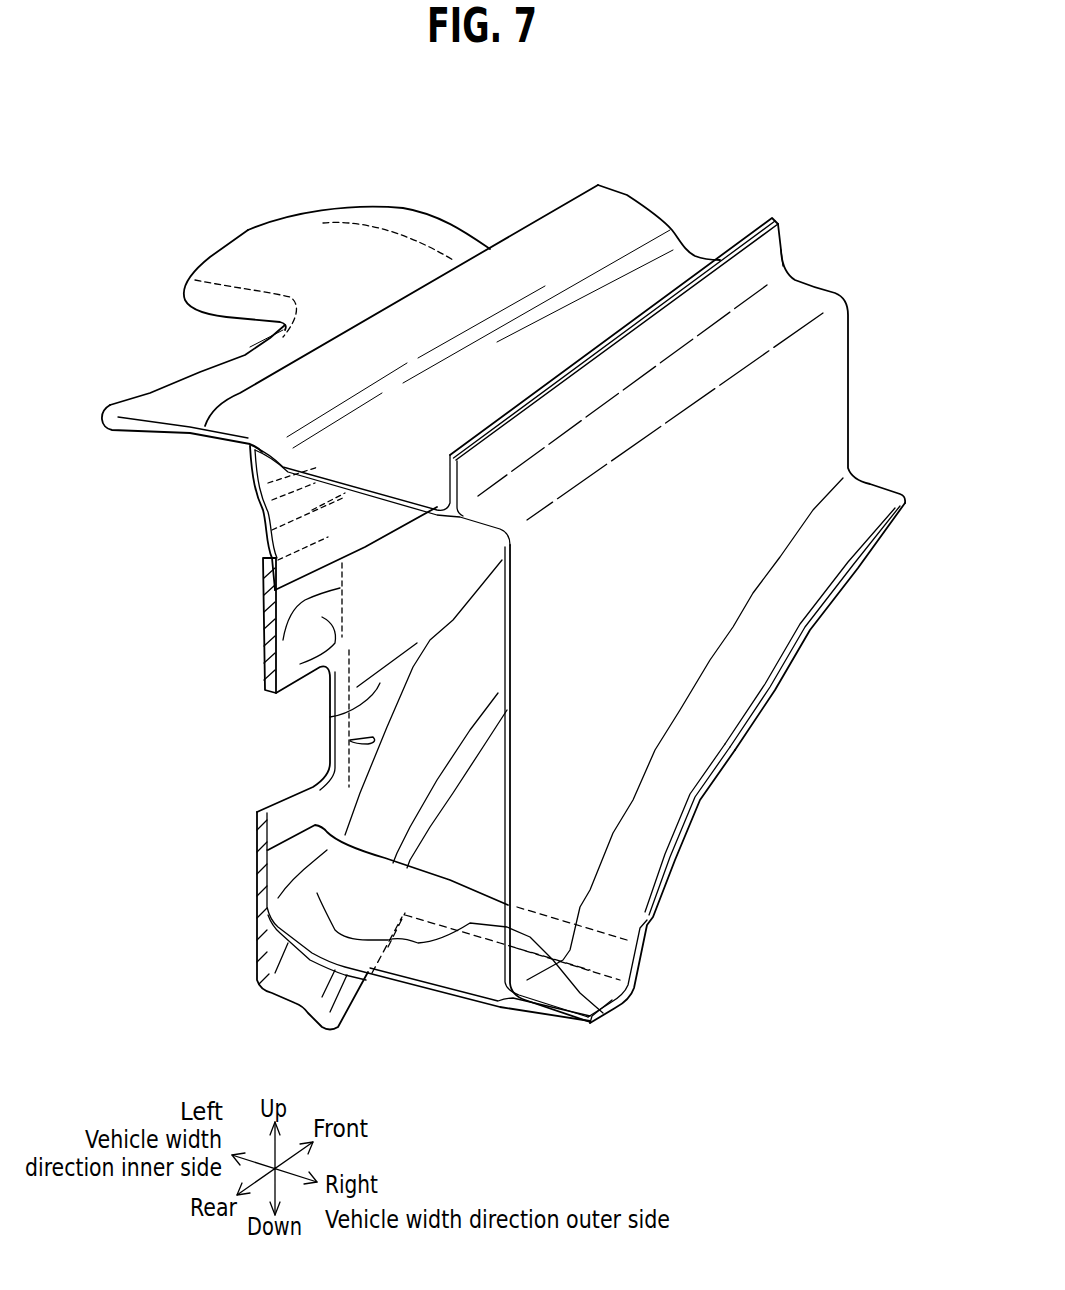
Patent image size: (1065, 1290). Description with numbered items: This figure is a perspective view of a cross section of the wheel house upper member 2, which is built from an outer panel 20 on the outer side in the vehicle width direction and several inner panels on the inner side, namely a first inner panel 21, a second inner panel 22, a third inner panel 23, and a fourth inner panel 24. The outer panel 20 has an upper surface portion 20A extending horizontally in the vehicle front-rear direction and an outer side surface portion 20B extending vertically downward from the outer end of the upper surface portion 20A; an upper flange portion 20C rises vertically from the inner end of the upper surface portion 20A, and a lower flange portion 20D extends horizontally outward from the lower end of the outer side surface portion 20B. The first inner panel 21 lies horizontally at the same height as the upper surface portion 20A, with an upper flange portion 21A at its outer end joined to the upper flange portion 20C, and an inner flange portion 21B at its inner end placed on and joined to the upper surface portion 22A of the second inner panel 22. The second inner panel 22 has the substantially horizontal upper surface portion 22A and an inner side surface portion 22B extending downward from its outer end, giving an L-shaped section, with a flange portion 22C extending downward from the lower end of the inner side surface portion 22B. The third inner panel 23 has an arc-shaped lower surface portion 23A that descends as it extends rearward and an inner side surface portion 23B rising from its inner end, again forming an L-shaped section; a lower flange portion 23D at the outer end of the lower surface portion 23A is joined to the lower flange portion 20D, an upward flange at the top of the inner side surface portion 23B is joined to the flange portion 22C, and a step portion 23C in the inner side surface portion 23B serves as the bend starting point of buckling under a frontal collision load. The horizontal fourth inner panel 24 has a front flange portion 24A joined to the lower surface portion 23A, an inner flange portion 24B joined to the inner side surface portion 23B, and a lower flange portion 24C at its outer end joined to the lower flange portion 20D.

The wheel house upper member 2 is at (773, 752).
The outer panel 20 is at (813, 410).
The upper surface portion 20A is at (797, 307).
The outer side surface portion 20B is at (800, 463).
The upper flange portion 20C is at (767, 255).
The lower flange portion 20D is at (805, 568).
The first inner panel 21 is at (680, 269).
The upper flange portion 21A is at (773, 221).
The inner flange portion 21B is at (540, 238).
The second inner panel 22 is at (150, 392).
The upper surface portion 22A is at (207, 388).
The inner side surface portion 22B is at (262, 524).
The flange portion 22C is at (300, 560).
The third inner panel 23 is at (485, 837).
The lower surface portion 23A is at (468, 797).
The inner side surface portion 23B is at (328, 712).
The step portion 23C is at (350, 740).
The lower flange portion 23D is at (712, 800).
The fourth inner panel 24 is at (458, 972).
The front flange portion 24A is at (607, 1017).
The inner flange portion 24B is at (290, 870).
The lower flange portion 24C is at (573, 1023).